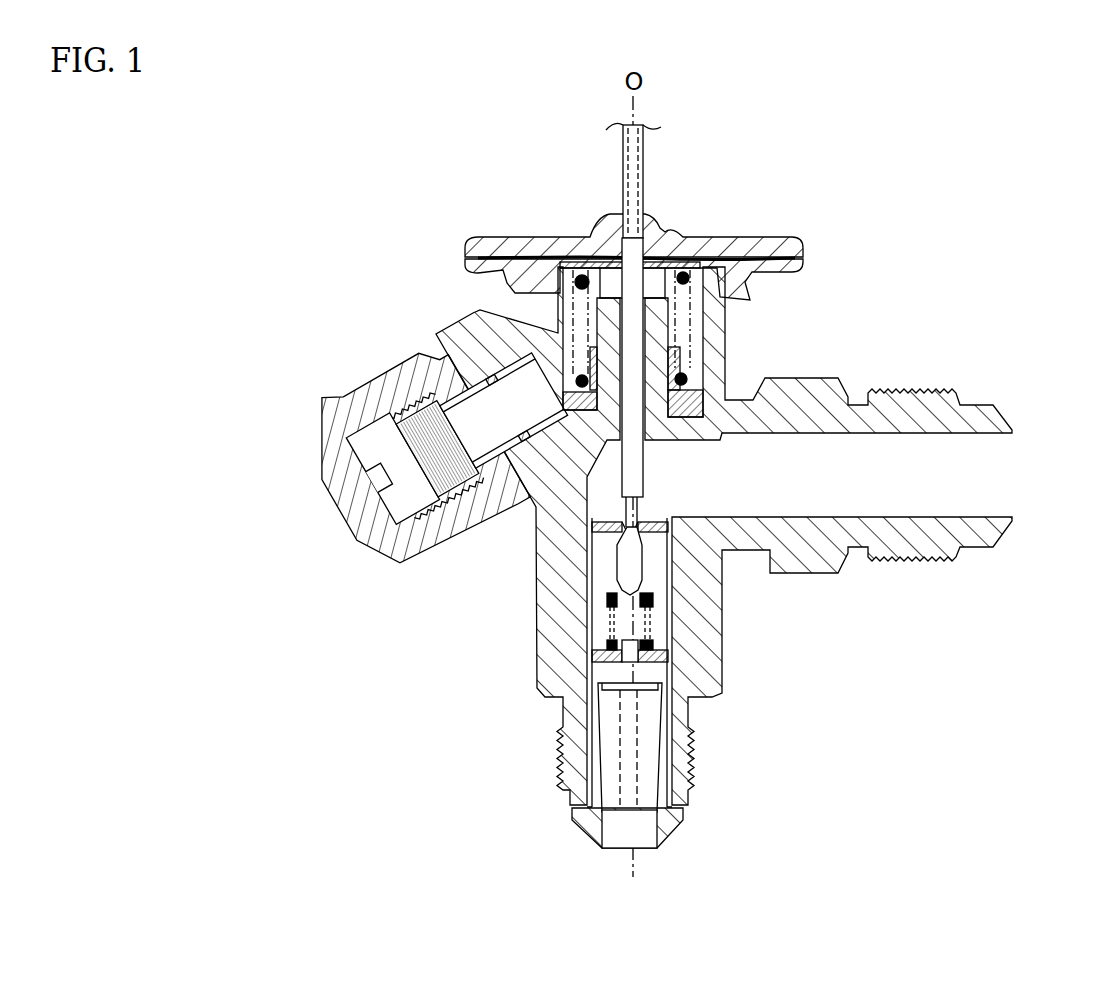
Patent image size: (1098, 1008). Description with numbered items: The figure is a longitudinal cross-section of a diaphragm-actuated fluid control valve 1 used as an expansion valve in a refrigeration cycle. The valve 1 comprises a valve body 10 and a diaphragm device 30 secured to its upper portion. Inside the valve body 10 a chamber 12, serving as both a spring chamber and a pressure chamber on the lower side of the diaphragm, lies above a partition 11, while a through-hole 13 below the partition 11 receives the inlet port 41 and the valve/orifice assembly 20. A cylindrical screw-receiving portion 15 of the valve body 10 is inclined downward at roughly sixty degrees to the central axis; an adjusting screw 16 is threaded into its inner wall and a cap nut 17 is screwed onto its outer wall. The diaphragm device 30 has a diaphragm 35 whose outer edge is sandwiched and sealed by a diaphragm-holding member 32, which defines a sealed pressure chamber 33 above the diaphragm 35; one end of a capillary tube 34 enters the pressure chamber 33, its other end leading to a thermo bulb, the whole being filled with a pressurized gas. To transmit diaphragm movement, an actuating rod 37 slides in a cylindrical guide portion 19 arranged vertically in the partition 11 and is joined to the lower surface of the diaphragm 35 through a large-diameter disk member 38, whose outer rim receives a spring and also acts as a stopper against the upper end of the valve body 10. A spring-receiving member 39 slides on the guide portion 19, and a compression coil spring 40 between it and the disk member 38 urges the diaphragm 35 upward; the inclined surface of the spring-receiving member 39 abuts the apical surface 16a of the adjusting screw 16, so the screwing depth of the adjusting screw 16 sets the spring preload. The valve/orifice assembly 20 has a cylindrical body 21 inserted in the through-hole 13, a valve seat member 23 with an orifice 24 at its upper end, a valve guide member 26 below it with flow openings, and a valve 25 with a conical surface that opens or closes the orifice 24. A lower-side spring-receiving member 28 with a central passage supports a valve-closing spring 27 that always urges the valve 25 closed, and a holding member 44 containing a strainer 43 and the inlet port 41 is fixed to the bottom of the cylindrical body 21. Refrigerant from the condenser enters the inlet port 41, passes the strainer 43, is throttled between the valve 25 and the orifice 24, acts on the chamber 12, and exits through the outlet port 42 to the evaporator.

The diaphragm-actuated fluid control valve 1 is at (425, 207).
The valve body 10 is at (530, 647).
The partition 11 is at (693, 433).
The chamber 12 is at (698, 318).
The through-hole 13 is at (587, 622).
The screw-receiving portion 15 is at (460, 357).
The adjusting screw 16 is at (360, 423).
The apical surface 16a is at (553, 360).
The cap nut 17 is at (390, 547).
The cylindrical guide portion 19 is at (556, 302).
The valve/orifice assembly 20 is at (583, 712).
The cylindrical body 21 is at (580, 803).
The valve seat member 23 is at (592, 525).
The orifice 24 is at (592, 557).
The valve 25 is at (640, 550).
The valve guide member 26 is at (592, 583).
The valve-closing spring 27 is at (648, 605).
The lower-side spring-receiving member 28 is at (667, 652).
The diaphragm device 30 is at (657, 211).
The diaphragm-holding member 32 is at (503, 240).
The pressure chamber 33 is at (618, 247).
The capillary tube 34 is at (648, 156).
The diaphragm 35 is at (708, 256).
The actuating rod 37 is at (641, 463).
The large-diameter disk member 38 is at (795, 247).
The spring-receiving member 39 is at (723, 400).
The compression coil spring 40 is at (742, 299).
The inlet port 41 is at (613, 837).
The outlet port 42 is at (1005, 527).
The strainer 43 is at (647, 723).
The holding member 44 is at (587, 830).